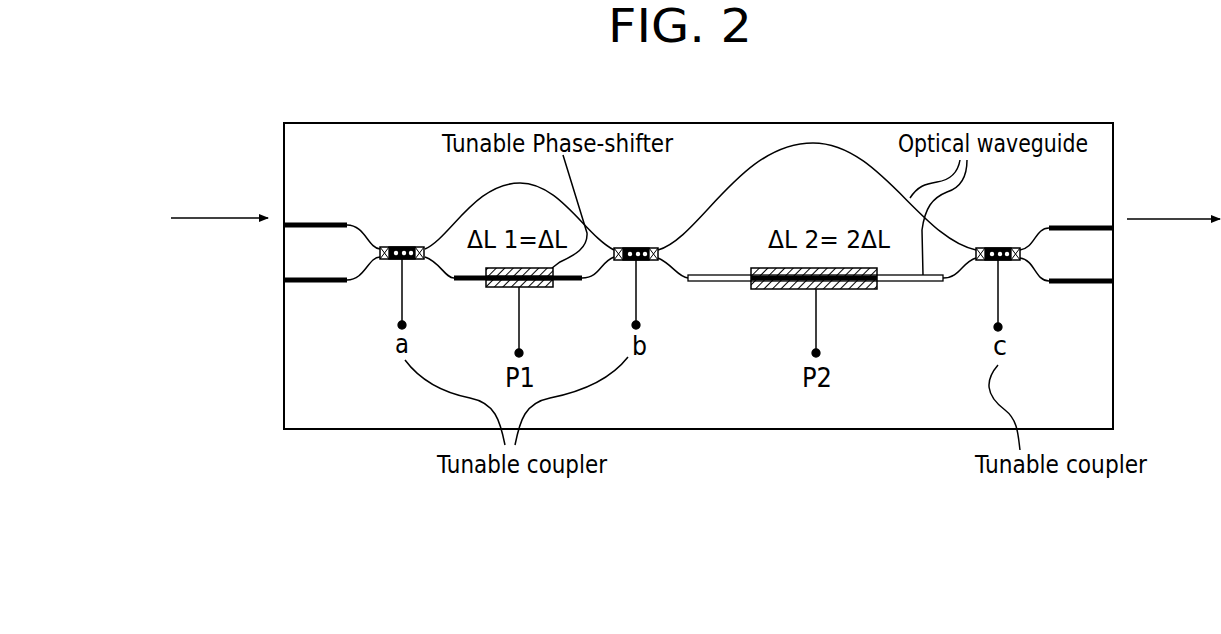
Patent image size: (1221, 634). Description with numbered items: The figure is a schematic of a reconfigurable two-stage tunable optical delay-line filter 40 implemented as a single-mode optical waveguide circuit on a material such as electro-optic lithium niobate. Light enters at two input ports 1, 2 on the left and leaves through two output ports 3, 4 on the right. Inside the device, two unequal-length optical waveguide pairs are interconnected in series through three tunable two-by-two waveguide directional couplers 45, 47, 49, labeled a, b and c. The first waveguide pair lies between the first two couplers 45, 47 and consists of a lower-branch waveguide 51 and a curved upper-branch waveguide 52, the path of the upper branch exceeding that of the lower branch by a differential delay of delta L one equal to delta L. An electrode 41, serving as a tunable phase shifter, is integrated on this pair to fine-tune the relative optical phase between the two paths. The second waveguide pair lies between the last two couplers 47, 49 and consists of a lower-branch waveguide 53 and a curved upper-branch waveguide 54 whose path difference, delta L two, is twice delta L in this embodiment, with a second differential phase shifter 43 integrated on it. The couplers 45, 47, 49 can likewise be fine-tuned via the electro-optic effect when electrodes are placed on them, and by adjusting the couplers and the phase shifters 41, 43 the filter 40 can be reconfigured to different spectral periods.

The input port 1 is at (315, 209).
The input port 2 is at (315, 297).
The output port 3 is at (1081, 211).
The output port 4 is at (1081, 297).
The reconfigurable two-stage optical delay-line filter 40 is at (818, 105).
The electrode 41 is at (541, 288).
The differential phase shifter 43 is at (855, 290).
The tunable 2×2 waveguide directional coupler 45 is at (392, 247).
The tunable 2×2 waveguide directional coupler 47 is at (647, 248).
The tunable 2×2 waveguide directional coupler 49 is at (1018, 247).
The lower-branch waveguide 51 is at (470, 283).
The upper-branch waveguide 52 is at (445, 240).
The lower-branch waveguide 53 is at (777, 290).
The upper-branch waveguide 54 is at (765, 153).